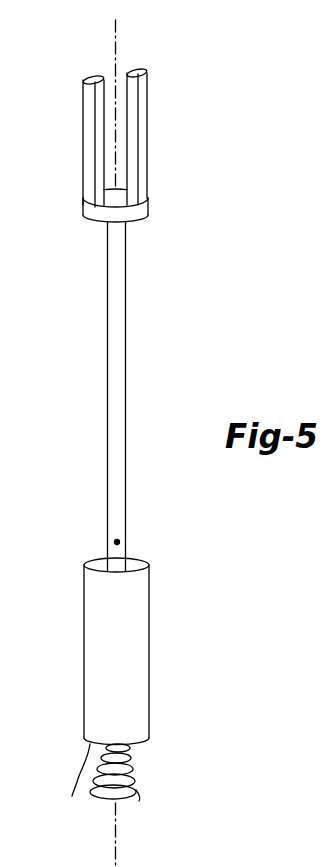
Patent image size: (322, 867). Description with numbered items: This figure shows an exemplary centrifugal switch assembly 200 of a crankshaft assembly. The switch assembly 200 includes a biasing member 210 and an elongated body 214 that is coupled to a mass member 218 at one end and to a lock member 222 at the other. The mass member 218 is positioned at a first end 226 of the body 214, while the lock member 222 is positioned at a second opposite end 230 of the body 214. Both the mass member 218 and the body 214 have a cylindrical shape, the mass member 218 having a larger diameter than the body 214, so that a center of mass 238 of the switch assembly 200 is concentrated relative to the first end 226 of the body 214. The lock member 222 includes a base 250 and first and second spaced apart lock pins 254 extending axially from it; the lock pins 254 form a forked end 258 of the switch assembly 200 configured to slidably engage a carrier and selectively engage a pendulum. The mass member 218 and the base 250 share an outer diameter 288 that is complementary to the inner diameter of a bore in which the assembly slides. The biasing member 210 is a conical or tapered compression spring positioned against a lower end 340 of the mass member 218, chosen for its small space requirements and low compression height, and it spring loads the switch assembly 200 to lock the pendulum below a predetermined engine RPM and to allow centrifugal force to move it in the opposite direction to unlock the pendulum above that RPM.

The centrifugal switch assembly 200 is at (175, 291).
The biasing member 210 is at (141, 770).
The body 214 is at (130, 361).
The mass member 218 is at (152, 652).
The lock member 222 is at (152, 160).
The first end 226 is at (111, 569).
The second opposite end 230 is at (119, 223).
The center of mass 238 is at (120, 542).
The base 250 is at (141, 209).
The lock pins 254 is at (95, 78).
The forked end 258 is at (160, 99).
The outer diameter 288 is at (93, 209).
The lower end 340 is at (75, 783).